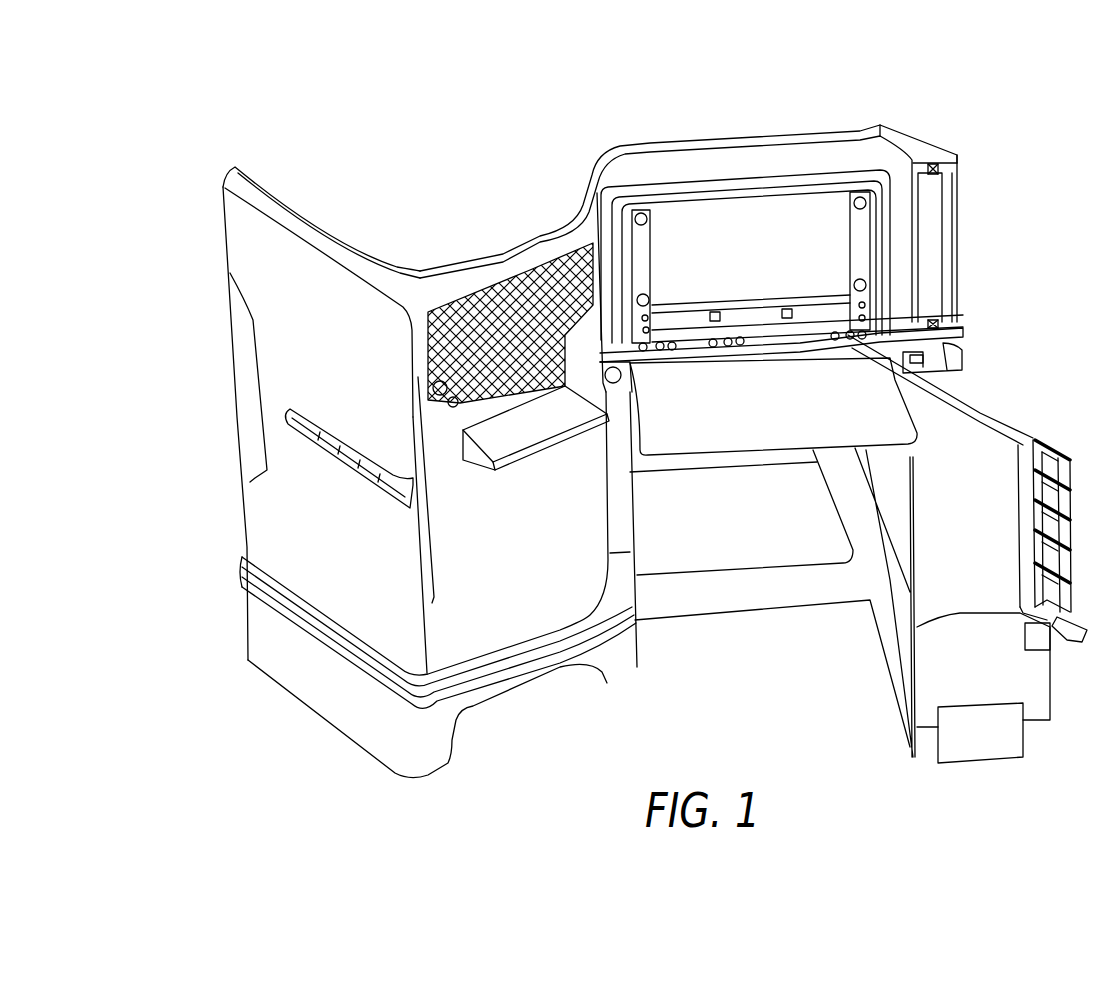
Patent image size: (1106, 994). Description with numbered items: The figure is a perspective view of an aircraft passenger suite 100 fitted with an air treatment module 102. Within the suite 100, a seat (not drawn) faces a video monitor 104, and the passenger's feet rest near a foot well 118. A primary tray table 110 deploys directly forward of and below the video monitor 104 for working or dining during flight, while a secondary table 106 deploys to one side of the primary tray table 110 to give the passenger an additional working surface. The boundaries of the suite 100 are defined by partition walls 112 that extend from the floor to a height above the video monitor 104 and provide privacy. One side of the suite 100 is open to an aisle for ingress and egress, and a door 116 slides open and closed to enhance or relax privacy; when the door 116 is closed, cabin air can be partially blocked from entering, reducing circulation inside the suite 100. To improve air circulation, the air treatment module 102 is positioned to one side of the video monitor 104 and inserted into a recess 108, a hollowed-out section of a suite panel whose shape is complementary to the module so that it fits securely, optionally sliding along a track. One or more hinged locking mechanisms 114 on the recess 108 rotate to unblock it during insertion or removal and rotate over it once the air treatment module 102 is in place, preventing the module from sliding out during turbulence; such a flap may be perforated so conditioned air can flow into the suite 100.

The aircraft passenger suite 100 is at (966, 125).
The air treatment module 102 is at (948, 222).
The video monitor 104 is at (747, 213).
The secondary table 106 is at (518, 423).
The recess 108 is at (921, 145).
The primary tray table 110 is at (890, 390).
The partition walls 112 is at (317, 235).
The hinged locking mechanism 114 is at (940, 170).
The door 116 is at (310, 507).
The foot well 118 is at (692, 518).